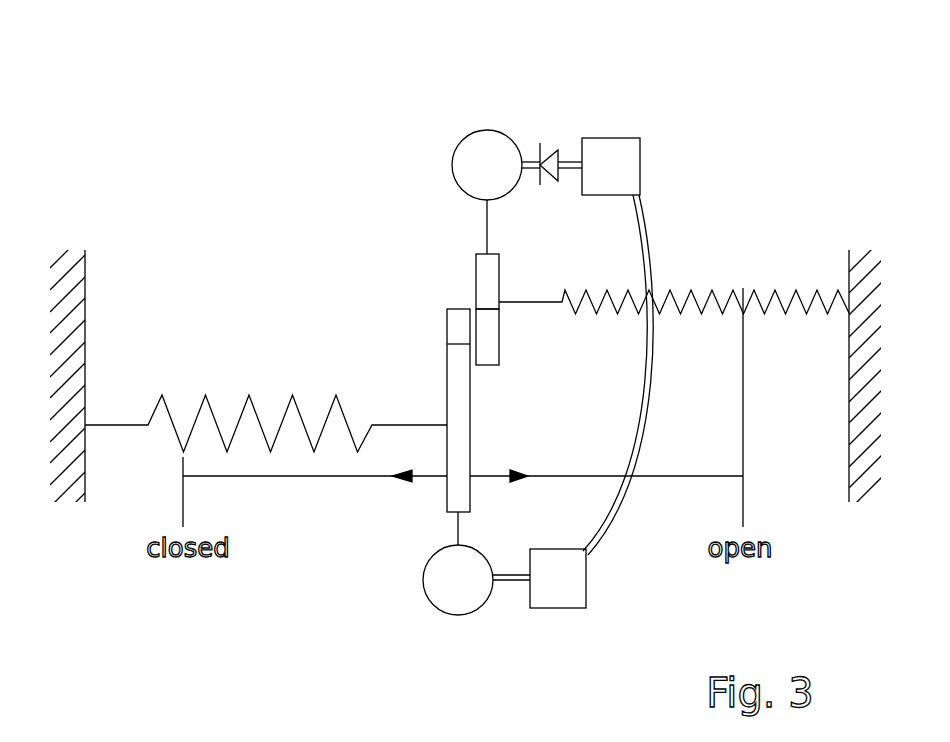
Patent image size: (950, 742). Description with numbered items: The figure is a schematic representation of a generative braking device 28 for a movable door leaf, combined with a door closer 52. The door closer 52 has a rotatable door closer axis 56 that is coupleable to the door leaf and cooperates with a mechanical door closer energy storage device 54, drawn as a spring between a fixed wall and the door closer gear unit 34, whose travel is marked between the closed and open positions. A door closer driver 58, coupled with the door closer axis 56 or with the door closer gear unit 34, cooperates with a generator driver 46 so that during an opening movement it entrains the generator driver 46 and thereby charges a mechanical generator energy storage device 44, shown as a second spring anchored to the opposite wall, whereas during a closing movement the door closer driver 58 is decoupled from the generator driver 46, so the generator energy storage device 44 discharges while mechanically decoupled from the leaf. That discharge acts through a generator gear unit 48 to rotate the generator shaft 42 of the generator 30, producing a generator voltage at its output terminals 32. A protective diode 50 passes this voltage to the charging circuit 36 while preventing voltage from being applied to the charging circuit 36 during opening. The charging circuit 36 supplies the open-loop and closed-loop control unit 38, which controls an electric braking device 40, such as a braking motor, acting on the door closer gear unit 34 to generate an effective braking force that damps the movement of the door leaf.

The generative braking device 28 is at (530, 128).
The generator 30 is at (475, 155).
The output terminals 32 is at (528, 140).
The protective diode 50 is at (548, 157).
The charging circuit 36 is at (610, 153).
The generator shaft 42 is at (486, 228).
The generator gear unit 48 is at (487, 269).
The generator driver 46 is at (487, 344).
The mechanical generator energy storage device 44 is at (701, 292).
The door closer gear unit 34 is at (464, 409).
The door closer driver 58 is at (447, 318).
The door closer axis 56 is at (447, 366).
The door closer 52 is at (266, 313).
The mechanical door closer energy storage device 54 is at (219, 410).
The electric braking device 40 is at (462, 590).
The open-loop and closed-loop control unit 38 is at (560, 588).